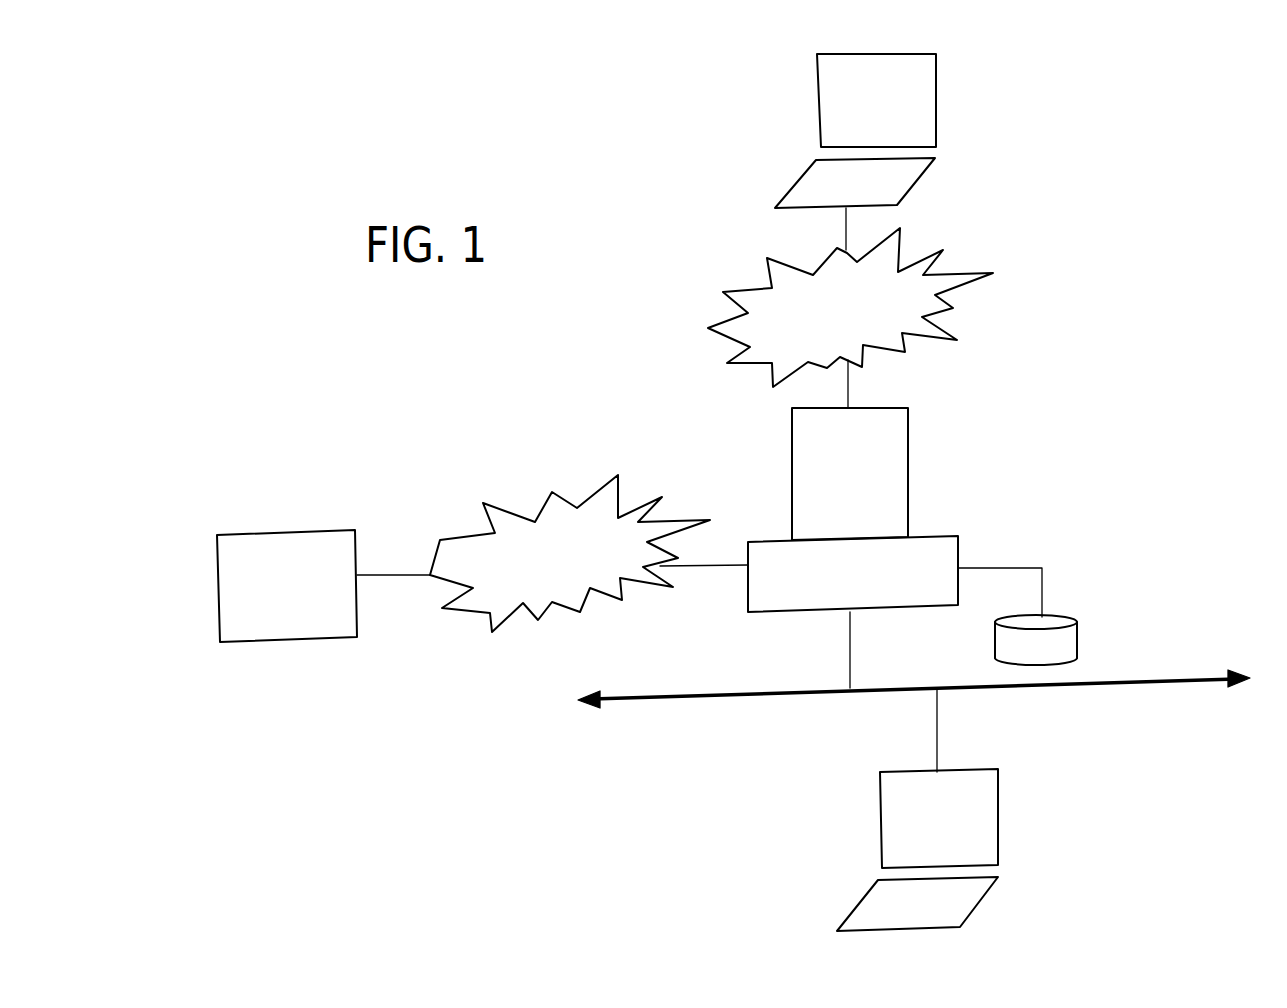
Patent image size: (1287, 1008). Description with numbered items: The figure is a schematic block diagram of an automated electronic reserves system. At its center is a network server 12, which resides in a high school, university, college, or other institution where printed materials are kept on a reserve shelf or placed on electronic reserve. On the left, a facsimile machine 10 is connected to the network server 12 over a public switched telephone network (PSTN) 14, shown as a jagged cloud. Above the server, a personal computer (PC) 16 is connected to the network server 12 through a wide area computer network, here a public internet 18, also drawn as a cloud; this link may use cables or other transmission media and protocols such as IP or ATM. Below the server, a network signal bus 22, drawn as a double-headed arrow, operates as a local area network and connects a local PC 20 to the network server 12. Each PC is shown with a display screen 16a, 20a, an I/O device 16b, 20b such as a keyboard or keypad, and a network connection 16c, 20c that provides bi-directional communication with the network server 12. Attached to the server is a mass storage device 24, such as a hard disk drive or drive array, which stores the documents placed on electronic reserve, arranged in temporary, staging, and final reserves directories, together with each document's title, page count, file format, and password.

The facsimile machine 10 is at (323, 568).
The network server 12 is at (851, 548).
The public switched telephone network (PSTN) 14 is at (547, 582).
The personal computer (PC) 16 is at (883, 147).
The display screen 16a is at (839, 95).
The I/O device 16b is at (827, 162).
The network connection 16c is at (825, 229).
The public internet 18 is at (829, 338).
The local PC 20 is at (950, 810).
The display screen 20a is at (900, 805).
The I/O device 20b is at (895, 878).
The network connection 20c is at (962, 731).
The network signal bus 22 is at (914, 660).
The mass storage device 24 is at (1060, 603).